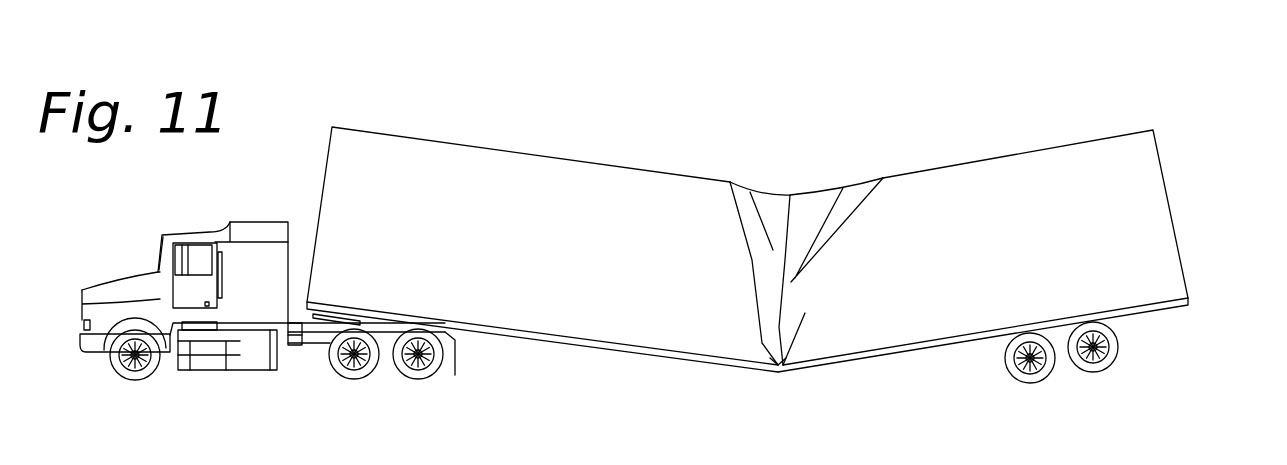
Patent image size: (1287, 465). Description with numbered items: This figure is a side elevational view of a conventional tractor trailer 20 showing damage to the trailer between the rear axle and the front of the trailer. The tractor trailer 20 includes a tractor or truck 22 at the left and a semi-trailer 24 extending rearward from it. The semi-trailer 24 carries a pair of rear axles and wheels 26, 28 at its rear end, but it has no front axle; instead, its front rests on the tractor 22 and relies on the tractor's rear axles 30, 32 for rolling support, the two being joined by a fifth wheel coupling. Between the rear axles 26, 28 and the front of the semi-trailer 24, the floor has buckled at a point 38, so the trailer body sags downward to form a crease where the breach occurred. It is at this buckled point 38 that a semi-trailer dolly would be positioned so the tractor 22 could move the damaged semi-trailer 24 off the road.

The tractor trailer 20 is at (789, 228).
The tractor 22 is at (215, 200).
The semi-trailer 24 is at (1148, 212).
The rear axle and wheel 26 is at (1097, 372).
The rear axle and wheel 28 is at (1028, 383).
The rear axle 30 is at (422, 379).
The rear axle 32 is at (344, 379).
The buckle point 38 is at (773, 377).